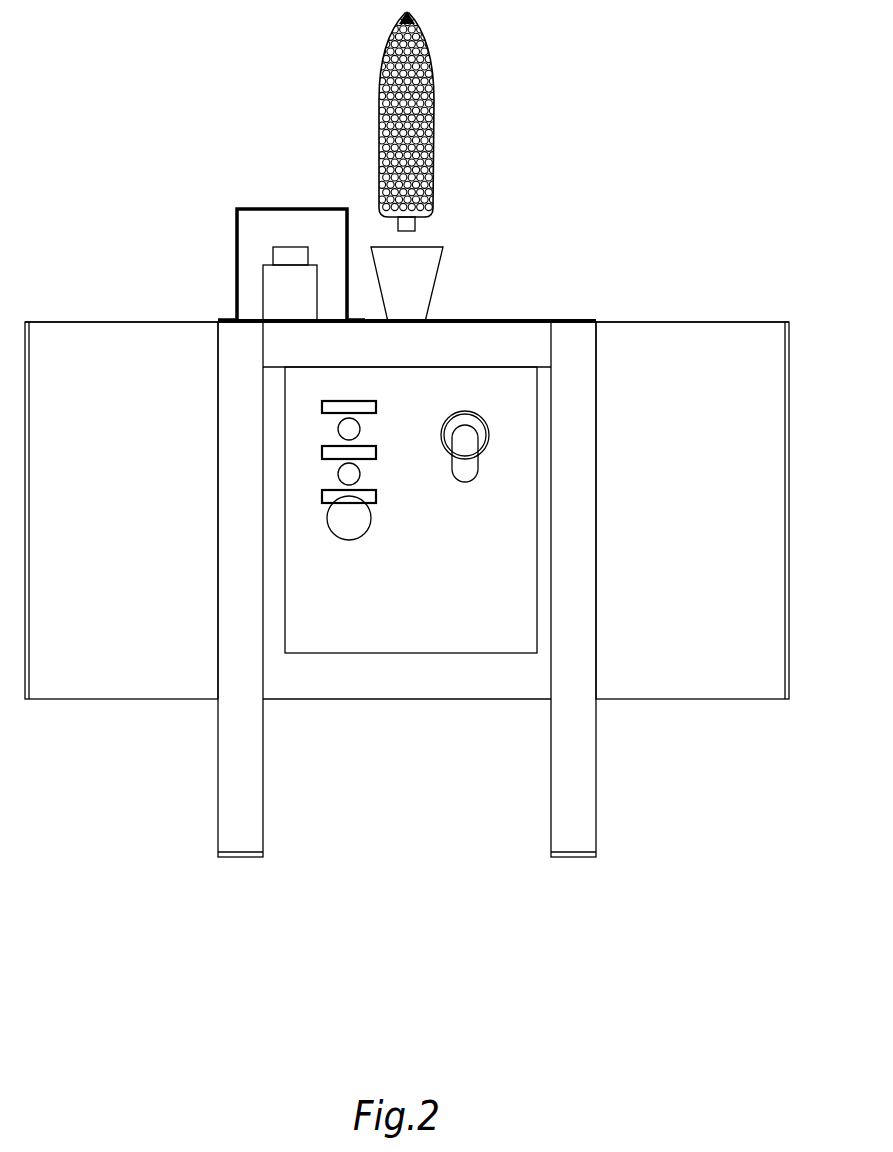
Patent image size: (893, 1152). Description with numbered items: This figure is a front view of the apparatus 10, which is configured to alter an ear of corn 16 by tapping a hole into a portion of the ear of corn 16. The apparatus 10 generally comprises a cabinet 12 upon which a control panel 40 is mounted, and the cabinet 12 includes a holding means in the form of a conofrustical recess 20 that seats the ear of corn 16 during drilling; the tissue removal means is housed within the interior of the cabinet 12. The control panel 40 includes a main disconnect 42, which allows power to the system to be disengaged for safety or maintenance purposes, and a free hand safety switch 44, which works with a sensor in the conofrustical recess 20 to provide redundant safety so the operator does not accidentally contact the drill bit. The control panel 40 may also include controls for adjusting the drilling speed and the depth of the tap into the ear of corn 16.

The apparatus 10 is at (587, 158).
The cabinet 12 is at (772, 430).
The ear of corn 16 is at (428, 73).
The conofrustical recess 20 is at (427, 282).
The control panel 40 is at (411, 562).
The main disconnect 42 is at (465, 475).
The free hand safety switch 44 is at (278, 247).